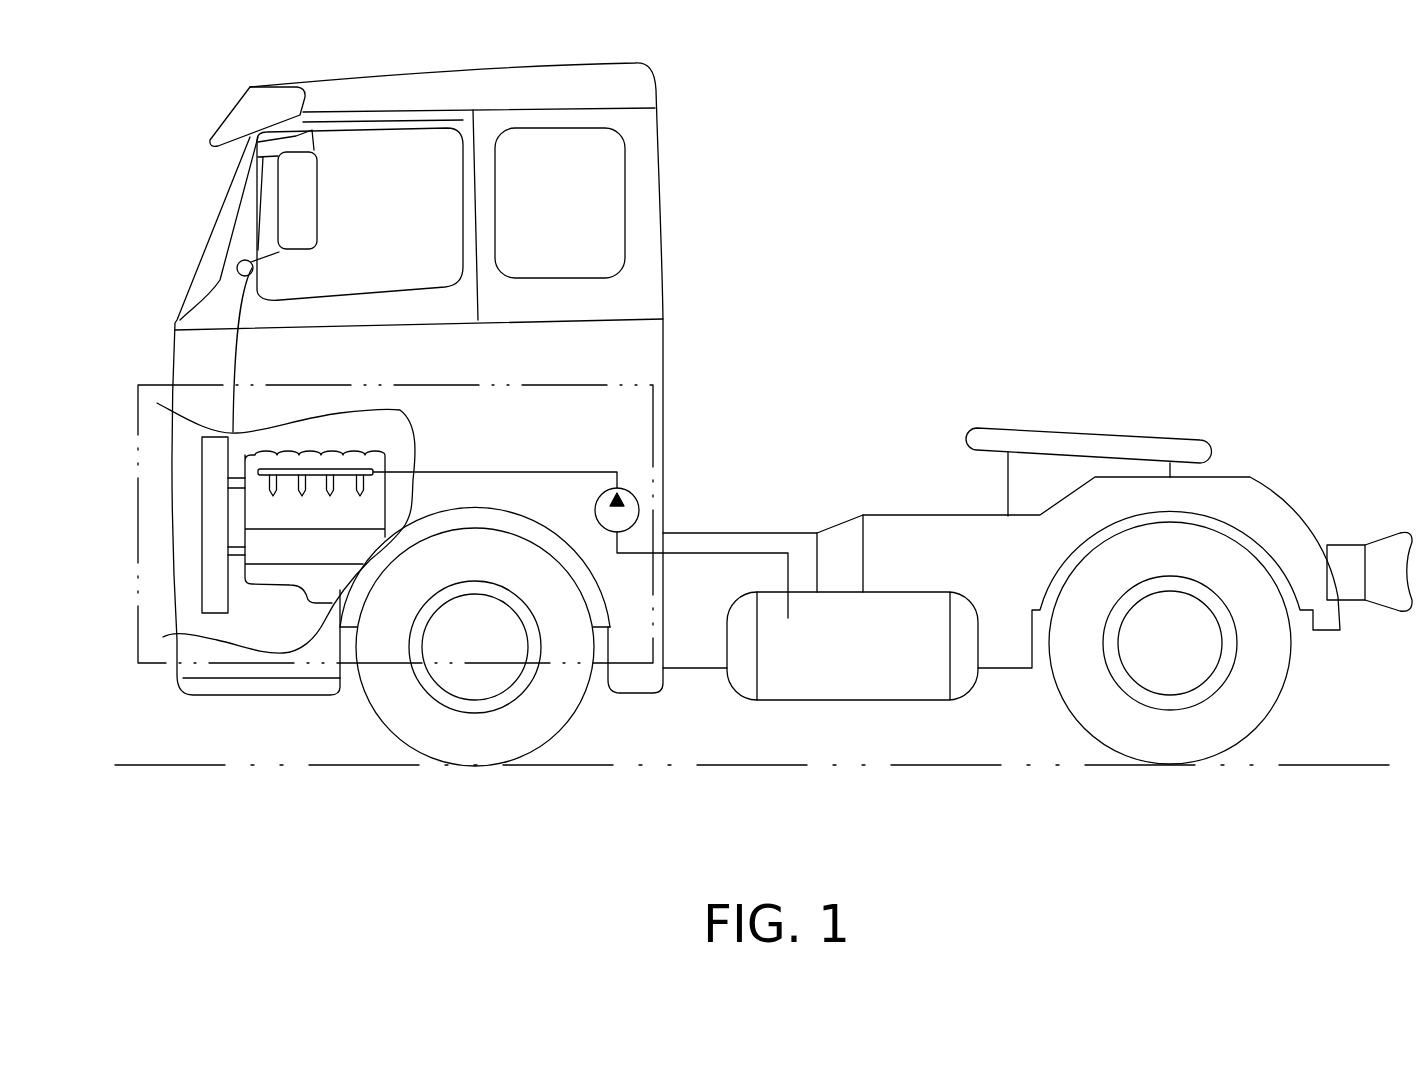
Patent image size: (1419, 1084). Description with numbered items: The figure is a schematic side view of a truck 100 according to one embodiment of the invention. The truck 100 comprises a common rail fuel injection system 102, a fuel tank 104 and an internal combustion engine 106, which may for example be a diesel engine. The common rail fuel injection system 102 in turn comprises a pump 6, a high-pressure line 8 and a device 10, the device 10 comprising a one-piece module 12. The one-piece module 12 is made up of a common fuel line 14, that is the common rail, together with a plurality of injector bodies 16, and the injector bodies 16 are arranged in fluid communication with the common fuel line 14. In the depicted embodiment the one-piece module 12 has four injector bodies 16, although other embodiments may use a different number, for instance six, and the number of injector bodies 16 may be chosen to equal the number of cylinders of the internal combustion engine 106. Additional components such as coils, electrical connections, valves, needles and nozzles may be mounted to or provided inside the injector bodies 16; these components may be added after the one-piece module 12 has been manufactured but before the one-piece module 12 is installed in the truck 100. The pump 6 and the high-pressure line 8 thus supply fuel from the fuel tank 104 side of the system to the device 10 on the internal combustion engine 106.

The truck 100 is at (962, 192).
The common rail fuel injection system 102 is at (610, 367).
The fuel tank 104 is at (867, 657).
The internal combustion engine 106 is at (303, 549).
The device 10 is at (357, 445).
The one-piece module 12 is at (227, 525).
The common fuel line 14 is at (290, 467).
The injector bodies 16 is at (362, 487).
The high-pressure line 8 is at (567, 470).
The pump 6 is at (639, 512).